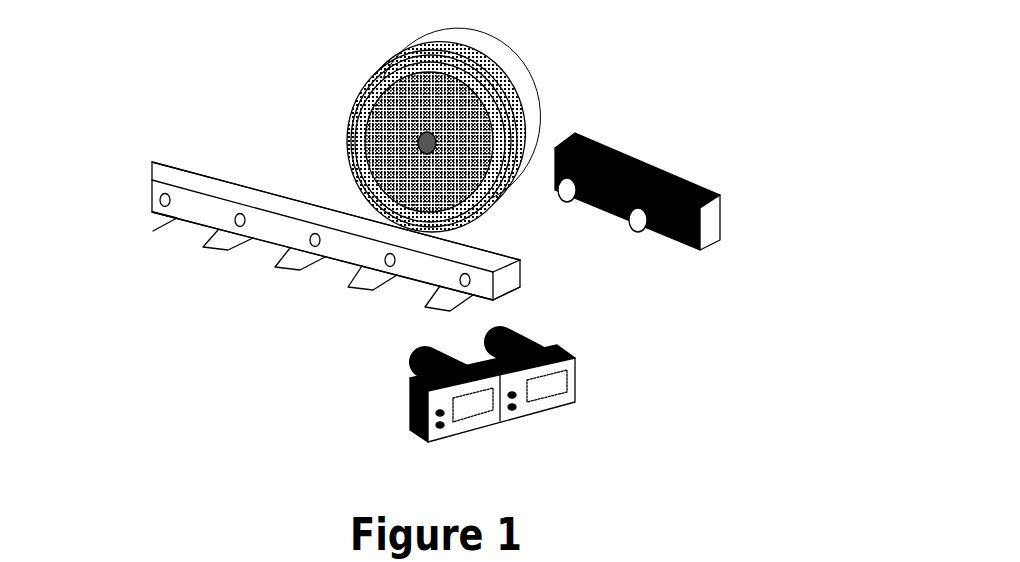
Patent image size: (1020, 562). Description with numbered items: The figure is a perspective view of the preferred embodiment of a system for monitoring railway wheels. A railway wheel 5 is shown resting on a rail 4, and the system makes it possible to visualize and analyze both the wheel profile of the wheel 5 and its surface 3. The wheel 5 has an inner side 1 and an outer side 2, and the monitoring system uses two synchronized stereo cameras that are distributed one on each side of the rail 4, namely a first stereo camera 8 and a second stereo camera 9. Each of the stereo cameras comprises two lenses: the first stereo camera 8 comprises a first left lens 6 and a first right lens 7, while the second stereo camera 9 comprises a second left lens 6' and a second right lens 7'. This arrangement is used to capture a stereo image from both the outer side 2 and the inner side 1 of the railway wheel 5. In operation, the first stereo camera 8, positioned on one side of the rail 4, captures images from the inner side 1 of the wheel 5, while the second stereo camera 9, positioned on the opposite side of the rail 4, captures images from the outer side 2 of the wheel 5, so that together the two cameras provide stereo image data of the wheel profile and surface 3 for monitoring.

The inner side 1 is at (350, 118).
The outer side 2 is at (477, 60).
The surface 3 is at (503, 160).
The rail 4 is at (226, 187).
The railway wheel 5 is at (424, 134).
The first left lens 6 is at (405, 357).
The second left lens 6' is at (669, 251).
The first right lens 7 is at (545, 328).
The second right lens 7' is at (587, 216).
The first stereo camera 8 is at (476, 394).
The second stereo camera 9 is at (637, 169).